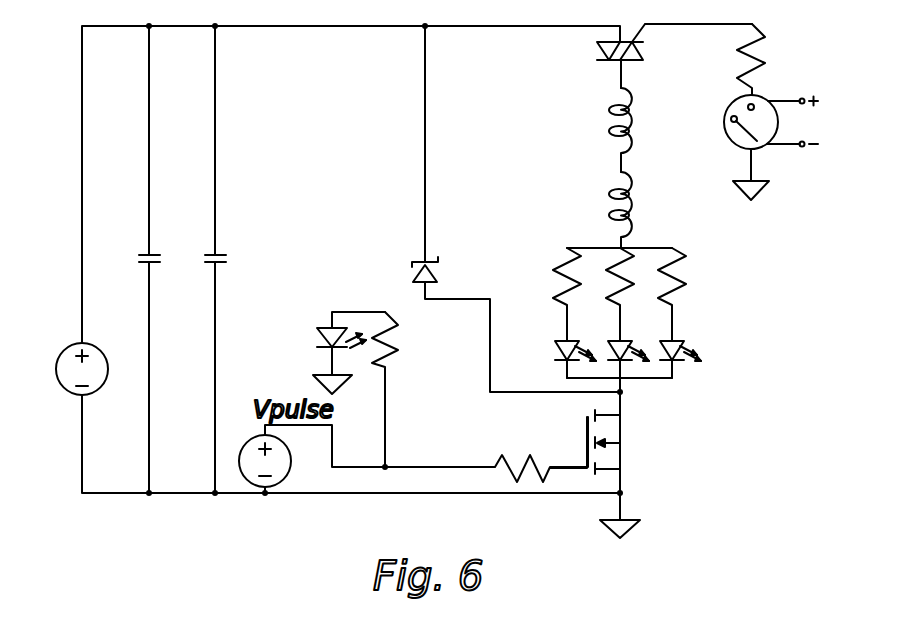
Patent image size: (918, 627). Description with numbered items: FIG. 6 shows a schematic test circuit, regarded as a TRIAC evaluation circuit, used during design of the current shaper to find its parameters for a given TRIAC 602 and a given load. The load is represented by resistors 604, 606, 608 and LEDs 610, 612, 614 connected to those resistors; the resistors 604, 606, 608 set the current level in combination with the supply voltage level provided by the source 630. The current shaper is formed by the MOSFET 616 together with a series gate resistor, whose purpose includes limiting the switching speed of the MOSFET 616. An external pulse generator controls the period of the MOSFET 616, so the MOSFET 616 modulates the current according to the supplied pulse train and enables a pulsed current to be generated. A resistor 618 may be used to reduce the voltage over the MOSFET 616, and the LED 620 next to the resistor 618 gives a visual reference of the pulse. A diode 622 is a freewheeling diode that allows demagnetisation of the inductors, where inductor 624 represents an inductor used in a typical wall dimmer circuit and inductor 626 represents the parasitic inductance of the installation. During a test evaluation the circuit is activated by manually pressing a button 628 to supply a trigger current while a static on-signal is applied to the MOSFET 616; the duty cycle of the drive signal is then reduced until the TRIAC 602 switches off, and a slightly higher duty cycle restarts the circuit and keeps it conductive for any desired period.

The TRIAC 602 is at (598, 47).
The resistor 604 is at (560, 280).
The resistor 606 is at (682, 260).
The resistor 608 is at (685, 297).
The LED 610 is at (560, 363).
The LED 612 is at (622, 378).
The LED 614 is at (674, 368).
The MOSFET 616 is at (618, 446).
The resistor 618 is at (397, 363).
The LED 620 is at (318, 340).
The diode 622 is at (412, 270).
The inductor 624 is at (612, 133).
The inductor 626 is at (612, 210).
The button 628 is at (766, 142).
The source 630 is at (70, 347).